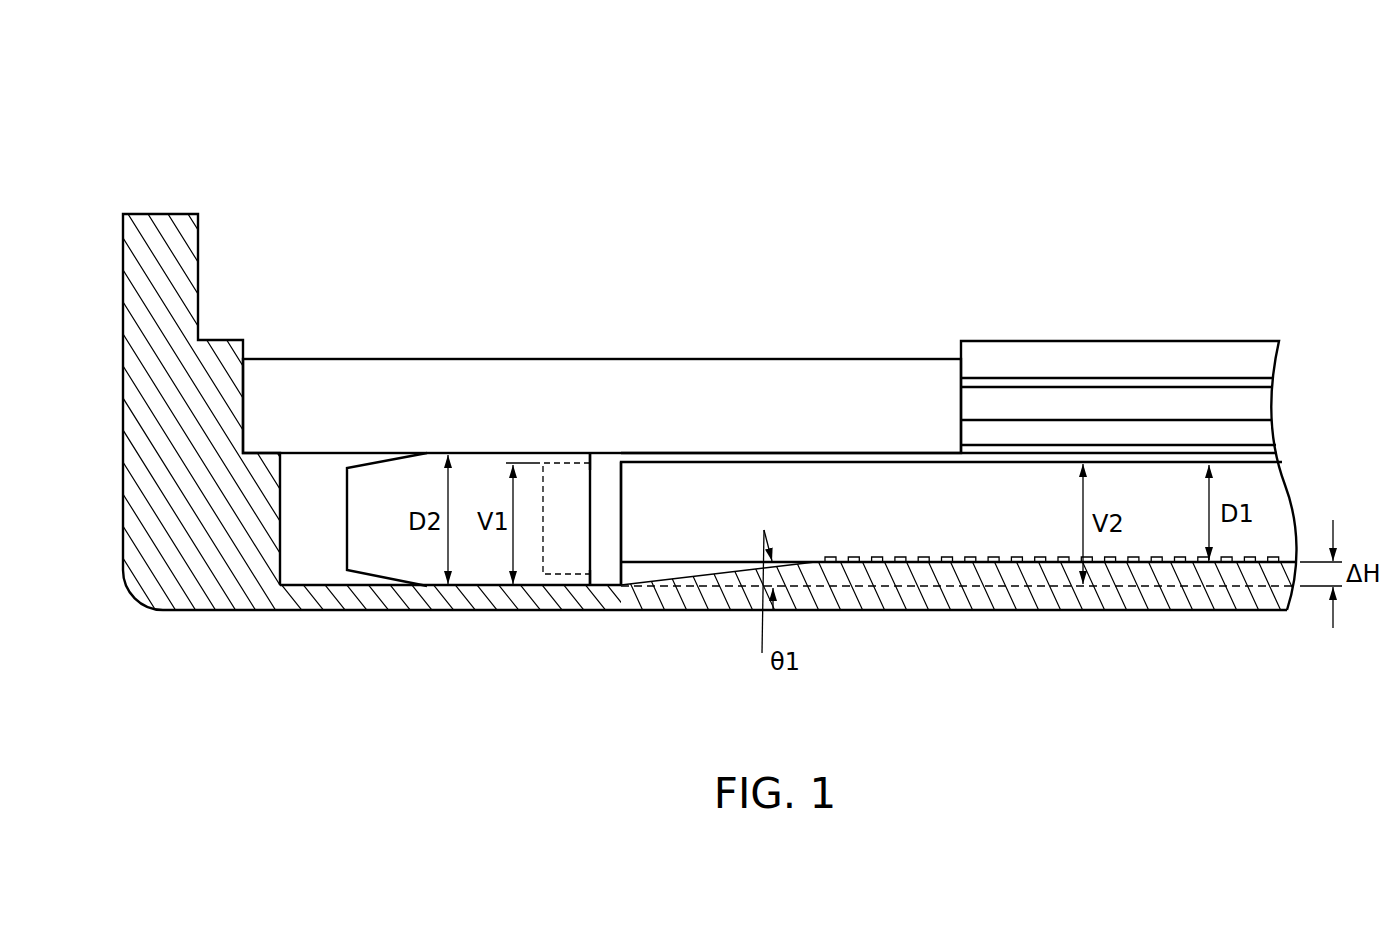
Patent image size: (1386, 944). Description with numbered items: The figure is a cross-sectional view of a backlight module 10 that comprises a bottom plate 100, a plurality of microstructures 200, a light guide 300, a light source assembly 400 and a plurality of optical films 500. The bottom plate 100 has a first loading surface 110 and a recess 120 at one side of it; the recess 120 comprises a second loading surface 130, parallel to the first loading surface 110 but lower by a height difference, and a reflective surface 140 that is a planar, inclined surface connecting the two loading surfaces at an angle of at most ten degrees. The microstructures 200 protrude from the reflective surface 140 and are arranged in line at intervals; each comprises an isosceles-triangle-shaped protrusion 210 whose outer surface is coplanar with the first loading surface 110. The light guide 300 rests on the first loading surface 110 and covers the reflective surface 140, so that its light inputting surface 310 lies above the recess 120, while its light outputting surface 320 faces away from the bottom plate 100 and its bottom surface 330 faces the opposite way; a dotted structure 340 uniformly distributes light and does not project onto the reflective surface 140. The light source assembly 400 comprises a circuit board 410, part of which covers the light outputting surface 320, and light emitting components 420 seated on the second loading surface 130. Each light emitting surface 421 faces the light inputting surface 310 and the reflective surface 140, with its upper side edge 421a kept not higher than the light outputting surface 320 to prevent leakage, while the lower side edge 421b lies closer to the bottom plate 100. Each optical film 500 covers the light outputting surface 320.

The backlight module 10 is at (312, 141).
The bottom plate 100 is at (1033, 590).
The first loading surface 110 is at (910, 557).
The recess 120 is at (312, 573).
The second loading surface 130 is at (390, 578).
The reflective surface 140 is at (718, 570).
The microstructures 200 is at (651, 571).
The protrusion 210 is at (663, 557).
The light guide 300 is at (815, 495).
The light inputting surface 310 is at (617, 524).
The light outputting surface 320 is at (853, 458).
The bottom surface 330 is at (1140, 563).
The dotted structure 340 is at (993, 560).
The light source assembly 400 is at (353, 297).
The circuit board 410 is at (371, 405).
The light emitting components 420 is at (565, 499).
The light emitting surface 421 is at (622, 499).
The side edge 421a is at (593, 455).
The side edge 421b is at (587, 576).
The optical films 500 is at (1115, 430).